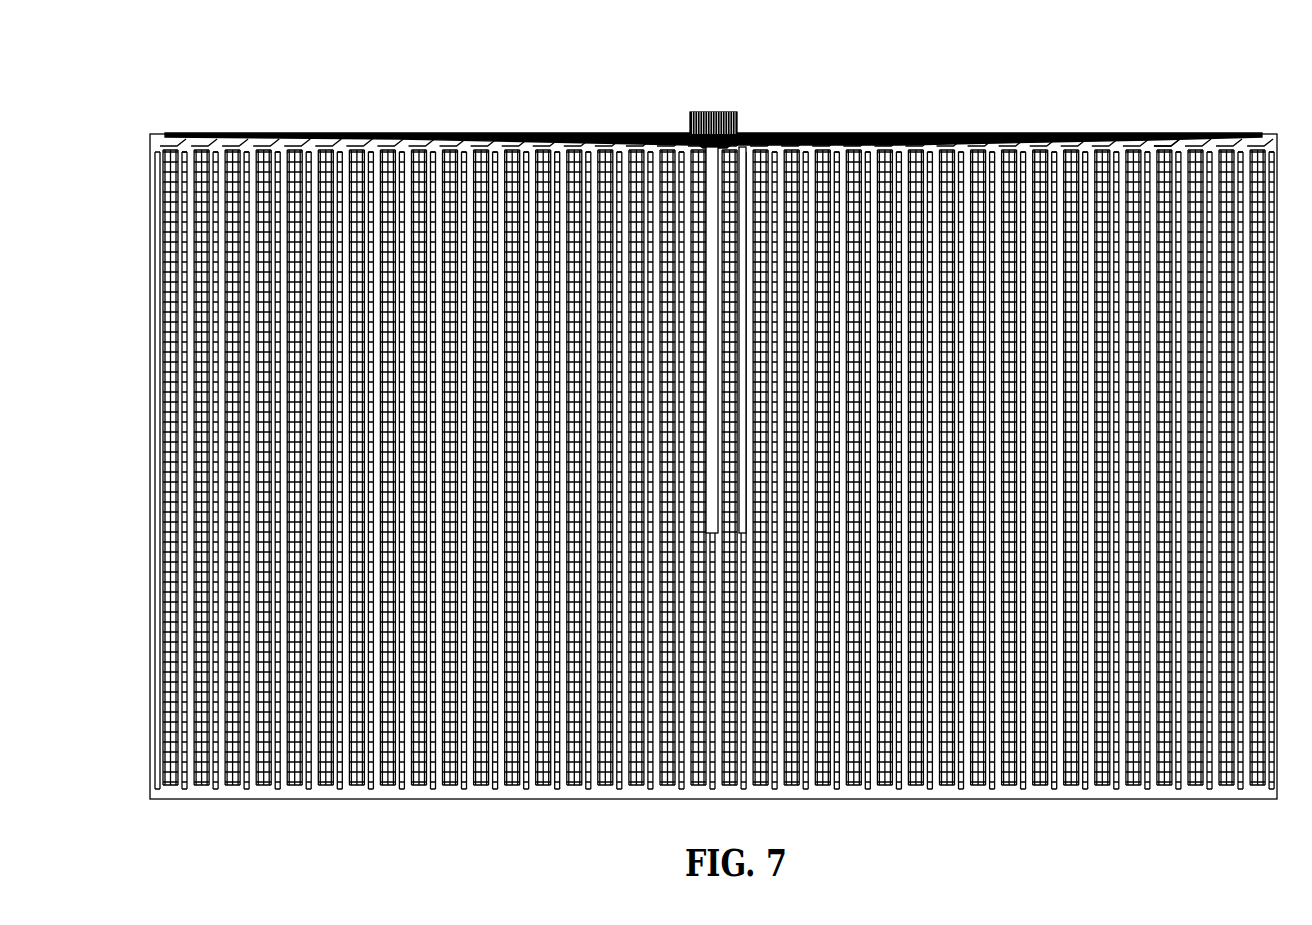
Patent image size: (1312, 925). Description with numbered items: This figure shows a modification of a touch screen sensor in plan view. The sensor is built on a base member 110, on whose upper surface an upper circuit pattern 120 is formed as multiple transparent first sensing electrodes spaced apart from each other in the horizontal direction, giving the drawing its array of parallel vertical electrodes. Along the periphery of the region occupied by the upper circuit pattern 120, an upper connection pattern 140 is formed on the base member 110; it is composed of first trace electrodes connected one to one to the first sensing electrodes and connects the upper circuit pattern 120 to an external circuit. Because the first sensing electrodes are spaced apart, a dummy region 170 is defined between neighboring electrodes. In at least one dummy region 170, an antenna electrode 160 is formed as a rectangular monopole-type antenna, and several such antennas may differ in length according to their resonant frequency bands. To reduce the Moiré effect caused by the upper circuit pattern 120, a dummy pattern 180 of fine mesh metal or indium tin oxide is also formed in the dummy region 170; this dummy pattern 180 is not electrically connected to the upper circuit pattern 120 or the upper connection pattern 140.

The base member 110 is at (165, 134).
The upper circuit pattern 120 is at (1232, 158).
The upper connection pattern 140 is at (690, 118).
The antenna electrode 160 is at (712, 165).
The dummy region 170 is at (898, 150).
The dummy pattern 180 is at (1180, 158).